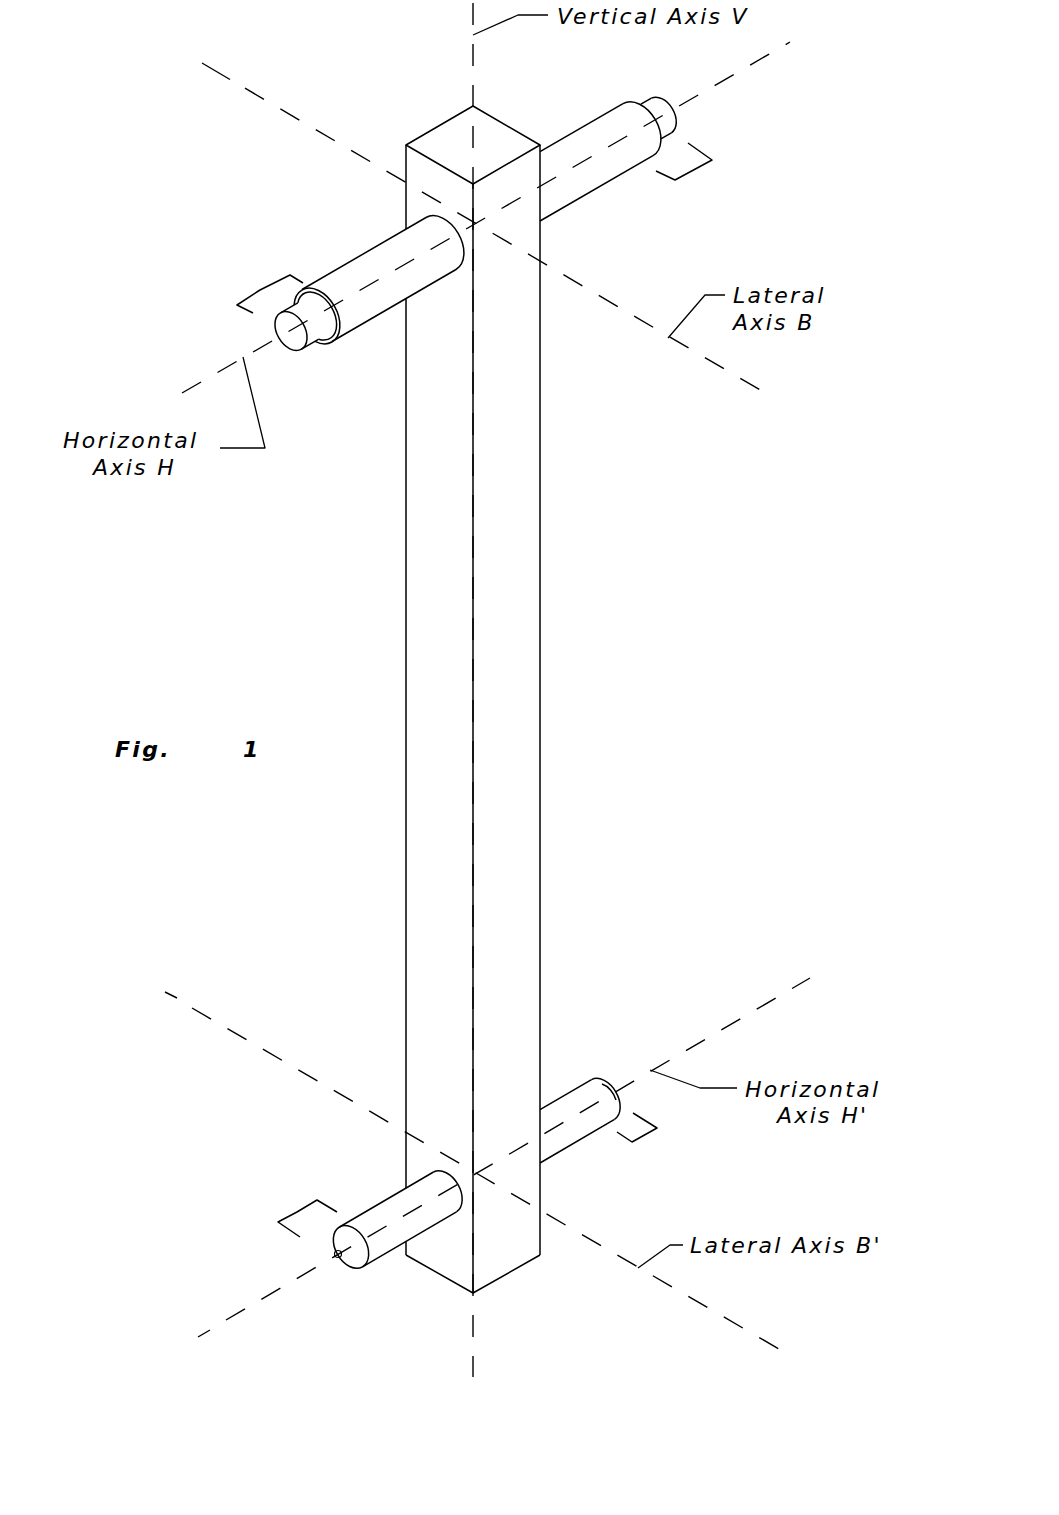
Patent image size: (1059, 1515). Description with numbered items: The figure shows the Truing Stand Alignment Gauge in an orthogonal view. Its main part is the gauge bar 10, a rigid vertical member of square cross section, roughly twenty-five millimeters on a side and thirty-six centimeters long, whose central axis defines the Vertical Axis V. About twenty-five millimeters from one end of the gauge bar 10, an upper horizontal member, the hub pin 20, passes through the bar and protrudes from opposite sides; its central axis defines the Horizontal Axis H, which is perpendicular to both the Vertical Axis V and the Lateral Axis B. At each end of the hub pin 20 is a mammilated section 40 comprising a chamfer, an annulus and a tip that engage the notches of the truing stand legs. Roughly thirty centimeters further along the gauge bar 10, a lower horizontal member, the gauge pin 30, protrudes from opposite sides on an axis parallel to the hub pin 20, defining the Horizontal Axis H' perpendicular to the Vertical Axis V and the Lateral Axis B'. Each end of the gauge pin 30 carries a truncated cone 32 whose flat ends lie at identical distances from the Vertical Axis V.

The gauge bar 10 is at (540, 573).
The hub pin 20 is at (368, 251).
The gauge pin 30 is at (390, 1251).
The truncated cone 32 is at (297, 1212).
The mammilated section 40 is at (260, 290).